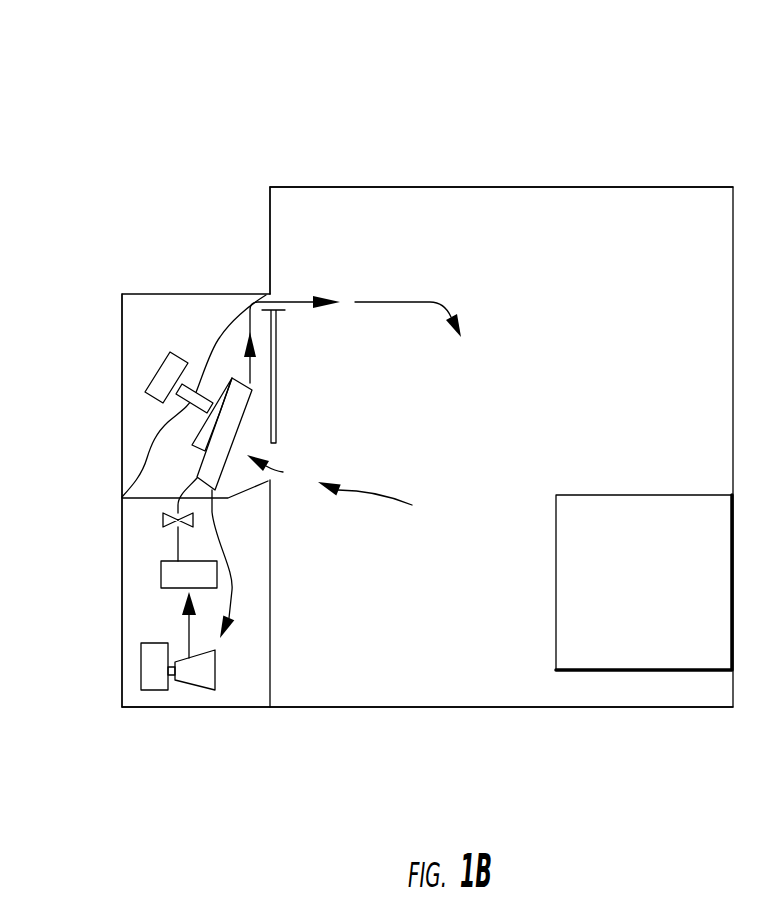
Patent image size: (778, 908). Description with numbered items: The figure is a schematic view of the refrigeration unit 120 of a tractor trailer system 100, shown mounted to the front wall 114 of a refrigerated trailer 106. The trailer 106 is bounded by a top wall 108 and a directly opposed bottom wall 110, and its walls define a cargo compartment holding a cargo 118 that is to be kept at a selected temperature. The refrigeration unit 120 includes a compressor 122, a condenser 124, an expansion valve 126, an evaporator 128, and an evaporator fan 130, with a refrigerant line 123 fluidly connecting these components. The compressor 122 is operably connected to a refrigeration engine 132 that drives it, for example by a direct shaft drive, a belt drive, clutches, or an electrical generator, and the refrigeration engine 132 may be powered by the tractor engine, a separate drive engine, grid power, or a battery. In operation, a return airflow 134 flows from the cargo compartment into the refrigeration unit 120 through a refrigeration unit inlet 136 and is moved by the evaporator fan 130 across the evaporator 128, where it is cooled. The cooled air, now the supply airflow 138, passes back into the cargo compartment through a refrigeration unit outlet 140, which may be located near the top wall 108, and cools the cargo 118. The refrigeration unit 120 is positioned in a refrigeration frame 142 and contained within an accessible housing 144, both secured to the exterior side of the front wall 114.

The tractor trailer system 100 is at (200, 119).
The trailer 106 is at (643, 218).
The top wall 108 is at (432, 187).
The bottom wall 110 is at (505, 707).
The front wall 114 is at (270, 250).
The cargo 118 is at (644, 582).
The refrigeration unit 120 is at (88, 250).
The compressor 122 is at (194, 686).
The refrigerant line 123 is at (178, 555).
The condenser 124 is at (160, 573).
The expansion valve 126 is at (163, 520).
The evaporator 128 is at (253, 413).
The evaporator fan 130 is at (197, 437).
The refrigeration engine 132 is at (150, 660).
The return airflow 134 is at (365, 497).
The refrigeration unit inlet 136 is at (283, 472).
The supply airflow 138 is at (377, 303).
The refrigeration unit outlet 140 is at (272, 294).
The refrigeration frame 142 is at (135, 485).
The housing 144 is at (121, 372).